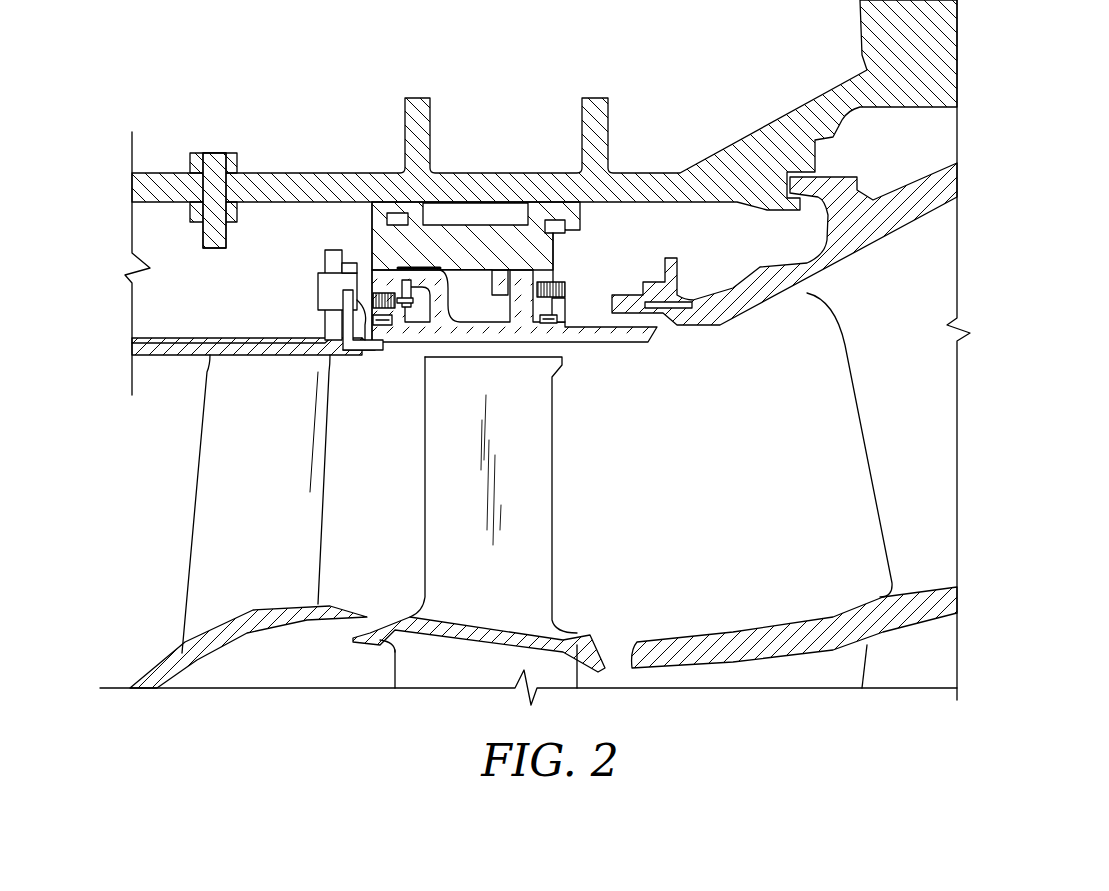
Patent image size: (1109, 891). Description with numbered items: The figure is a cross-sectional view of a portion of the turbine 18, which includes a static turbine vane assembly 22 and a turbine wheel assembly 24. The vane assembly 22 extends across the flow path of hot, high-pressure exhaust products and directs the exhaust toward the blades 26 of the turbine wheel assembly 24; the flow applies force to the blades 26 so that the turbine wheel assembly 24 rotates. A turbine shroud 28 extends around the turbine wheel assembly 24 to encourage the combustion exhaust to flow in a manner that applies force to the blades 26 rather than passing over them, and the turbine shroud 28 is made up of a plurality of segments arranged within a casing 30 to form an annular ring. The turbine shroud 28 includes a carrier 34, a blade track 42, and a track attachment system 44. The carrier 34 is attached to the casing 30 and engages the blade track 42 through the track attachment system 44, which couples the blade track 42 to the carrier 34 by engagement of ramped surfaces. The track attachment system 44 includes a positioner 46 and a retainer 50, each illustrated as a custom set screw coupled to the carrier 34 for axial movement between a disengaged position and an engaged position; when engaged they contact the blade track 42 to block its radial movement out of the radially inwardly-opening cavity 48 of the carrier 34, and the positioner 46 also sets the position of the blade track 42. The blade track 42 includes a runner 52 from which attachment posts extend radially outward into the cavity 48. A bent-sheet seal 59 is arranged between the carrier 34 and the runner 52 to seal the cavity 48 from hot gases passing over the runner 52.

The turbine 18 is at (123, 318).
The static turbine vane assembly 22 is at (192, 494).
The turbine wheel assembly 24 is at (615, 563).
The blades 26 is at (553, 498).
The turbine shroud 28 is at (360, 241).
The casing 30 is at (808, 104).
The carrier 34 is at (478, 242).
The blade track 42 is at (617, 341).
The track attachment system 44 is at (606, 274).
The positioner 46 is at (539, 284).
The radially inwardly-opening cavity 48 is at (470, 298).
The retainer 50 is at (398, 308).
The runner 52 is at (565, 341).
The bent-sheet seal 59 is at (380, 341).